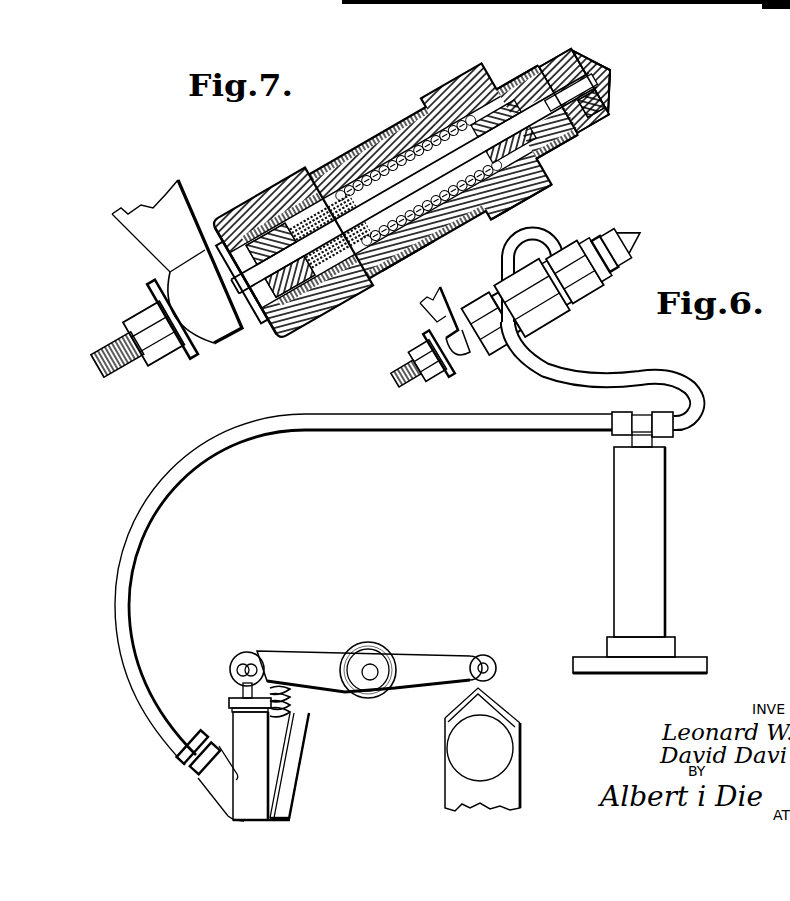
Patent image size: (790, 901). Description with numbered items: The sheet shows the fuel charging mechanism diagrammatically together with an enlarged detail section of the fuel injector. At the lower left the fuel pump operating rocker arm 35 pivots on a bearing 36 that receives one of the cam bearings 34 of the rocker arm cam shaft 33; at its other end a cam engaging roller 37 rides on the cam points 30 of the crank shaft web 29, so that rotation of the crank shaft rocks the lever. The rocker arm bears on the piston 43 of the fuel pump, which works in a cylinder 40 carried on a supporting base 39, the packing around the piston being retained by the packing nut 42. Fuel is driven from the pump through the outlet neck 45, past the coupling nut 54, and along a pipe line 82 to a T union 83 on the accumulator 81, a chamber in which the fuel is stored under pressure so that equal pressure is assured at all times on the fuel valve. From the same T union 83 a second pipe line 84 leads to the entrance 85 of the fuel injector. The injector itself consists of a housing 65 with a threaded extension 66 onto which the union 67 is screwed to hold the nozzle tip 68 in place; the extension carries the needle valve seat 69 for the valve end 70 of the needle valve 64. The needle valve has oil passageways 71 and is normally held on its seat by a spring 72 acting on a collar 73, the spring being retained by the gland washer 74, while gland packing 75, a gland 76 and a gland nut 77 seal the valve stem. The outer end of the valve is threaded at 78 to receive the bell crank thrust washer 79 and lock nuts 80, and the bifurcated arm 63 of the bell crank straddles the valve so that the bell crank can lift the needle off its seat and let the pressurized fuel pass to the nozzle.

In FIG. 6, the web 29 is at (524, 769).
In FIG. 6, the cam point 30 is at (505, 697).
In FIG. 6, the rocker arm cam shaft 33 is at (362, 690).
In FIG. 6, the cam bearing 34 is at (388, 681).
In FIG. 6, the fuel pump operating rocker arm 35 is at (450, 656).
In FIG. 6, the bearing 36 is at (384, 659).
In FIG. 6, the cam engaging roller 37 is at (493, 665).
In FIG. 6, the supporting base 39 is at (306, 778).
In FIG. 6, the cylinder 40 is at (238, 716).
In FIG. 6, the packing nut 42 is at (233, 703).
In FIG. 6, the piston 43 is at (240, 688).
In FIG. 6, the outlet neck 45 is at (220, 786).
In FIG. 6, the coupling nut 54 is at (193, 771).
In FIG. 7, the bifurcated arm 63 is at (233, 338).
In FIG. 6, the bifurcated arm 63 is at (468, 368).
In FIG. 7, the needle valve 64 is at (254, 331).
In FIG. 7, the housing 65 is at (445, 214).
In FIG. 6, the housing 65 is at (554, 314).
In FIG. 7, the threaded extension 66 is at (558, 142).
In FIG. 7, the union 67 is at (606, 101).
In FIG. 7, the nozzle tip 68 is at (613, 80).
In FIG. 6, the nozzle tip 68 is at (641, 239).
In FIG. 7, the needle valve seat 69 is at (588, 121).
In FIG. 7, the valve end 70 is at (575, 72).
In FIG. 7, the oil passageway 71 is at (529, 100).
In FIG. 7, the spring 72 is at (400, 243).
In FIG. 7, the collar 73 is at (522, 195).
In FIG. 6, the collar 73 is at (532, 282).
In FIG. 7, the gland washer 74 is at (366, 184).
In FIG. 7, the gland packing 75 is at (345, 190).
In FIG. 7, the gland 76 is at (303, 200).
In FIG. 7, the gland nut 77 is at (262, 206).
In FIG. 6, the gland nut 77 is at (510, 351).
In FIG. 7, the threaded end 78 is at (132, 358).
In FIG. 6, the threaded end 78 is at (396, 376).
In FIG. 7, the bell crank thrust washer 79 is at (155, 301).
In FIG. 6, the bell crank thrust washer 79 is at (430, 345).
In FIG. 7, the lock nut 80 is at (150, 345).
In FIG. 6, the lock nut 80 is at (420, 370).
In FIG. 6, the accumulator 81 is at (668, 493).
In FIG. 6, the pipe line 82 is at (224, 452).
In FIG. 6, the T union 83 is at (700, 401).
In FIG. 6, the pipe line 84 is at (627, 371).
In FIG. 6, the entrance 85 is at (567, 246).